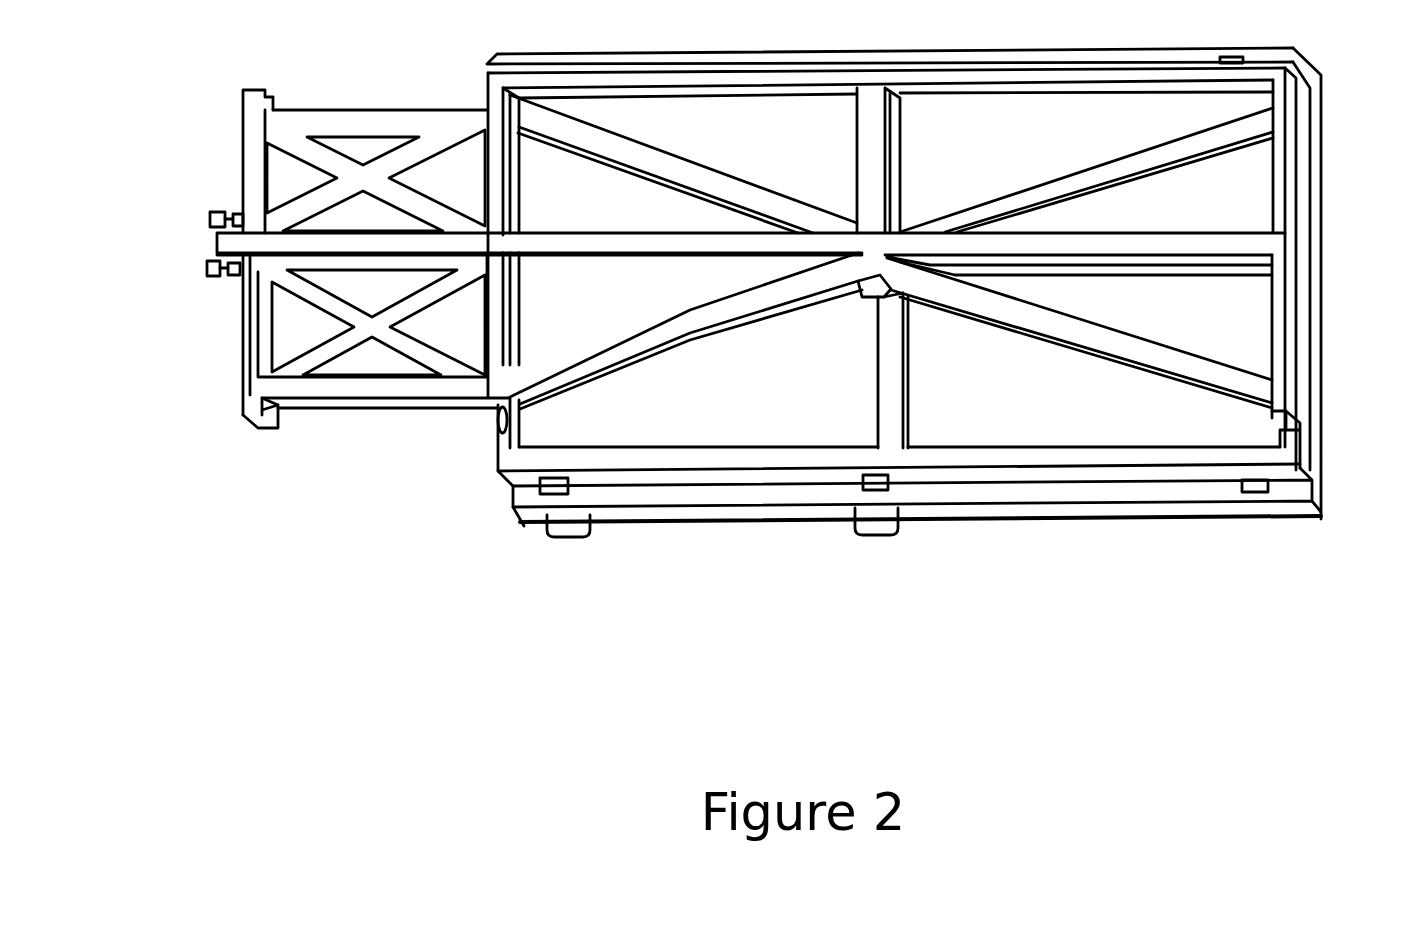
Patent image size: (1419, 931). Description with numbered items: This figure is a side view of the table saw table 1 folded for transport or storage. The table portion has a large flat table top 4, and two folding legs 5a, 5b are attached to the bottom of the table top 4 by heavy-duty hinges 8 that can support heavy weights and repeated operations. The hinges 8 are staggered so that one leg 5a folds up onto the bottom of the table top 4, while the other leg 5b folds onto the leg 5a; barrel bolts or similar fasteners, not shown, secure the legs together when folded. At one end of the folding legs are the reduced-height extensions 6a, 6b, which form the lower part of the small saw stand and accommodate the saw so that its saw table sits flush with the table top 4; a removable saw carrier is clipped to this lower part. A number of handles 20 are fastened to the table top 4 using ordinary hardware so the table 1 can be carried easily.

The frame assembly 1 is at (777, 358).
The table top 4 is at (1330, 221).
The folding leg 5a is at (497, 89).
The folding leg 5b is at (1302, 452).
The folded leg extension 6a is at (265, 431).
The folded leg extension 6b is at (237, 148).
The hinge 8 is at (550, 489).
The handle 20 is at (587, 542).